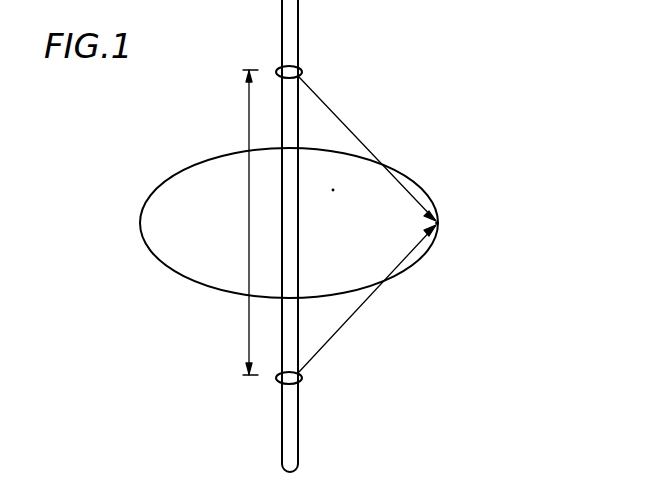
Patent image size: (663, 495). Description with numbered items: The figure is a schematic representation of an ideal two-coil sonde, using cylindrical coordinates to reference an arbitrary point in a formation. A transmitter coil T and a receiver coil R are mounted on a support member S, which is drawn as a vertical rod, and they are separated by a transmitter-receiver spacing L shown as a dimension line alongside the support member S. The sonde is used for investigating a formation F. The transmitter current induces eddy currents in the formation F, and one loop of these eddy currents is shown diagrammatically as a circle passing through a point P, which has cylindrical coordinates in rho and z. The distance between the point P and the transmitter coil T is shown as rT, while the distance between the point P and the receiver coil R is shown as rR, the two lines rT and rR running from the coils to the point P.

The support member S is at (298, 220).
The formation F is at (146, 205).
The transmitter coil T is at (300, 67).
The receiver coil R is at (300, 382).
The transmitter-receiver spacing L is at (247, 222).
The distance between point P and transmitter rT is at (348, 128).
The distance between point P and receiver rR is at (352, 318).
The point P is at (440, 222).